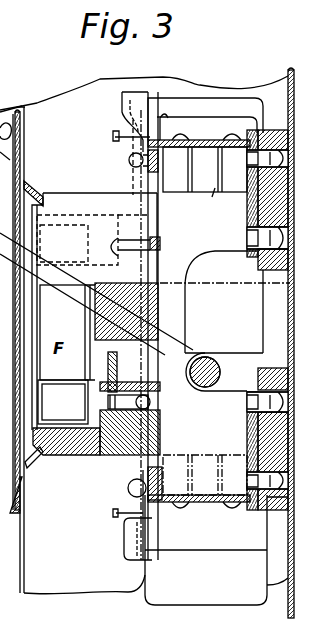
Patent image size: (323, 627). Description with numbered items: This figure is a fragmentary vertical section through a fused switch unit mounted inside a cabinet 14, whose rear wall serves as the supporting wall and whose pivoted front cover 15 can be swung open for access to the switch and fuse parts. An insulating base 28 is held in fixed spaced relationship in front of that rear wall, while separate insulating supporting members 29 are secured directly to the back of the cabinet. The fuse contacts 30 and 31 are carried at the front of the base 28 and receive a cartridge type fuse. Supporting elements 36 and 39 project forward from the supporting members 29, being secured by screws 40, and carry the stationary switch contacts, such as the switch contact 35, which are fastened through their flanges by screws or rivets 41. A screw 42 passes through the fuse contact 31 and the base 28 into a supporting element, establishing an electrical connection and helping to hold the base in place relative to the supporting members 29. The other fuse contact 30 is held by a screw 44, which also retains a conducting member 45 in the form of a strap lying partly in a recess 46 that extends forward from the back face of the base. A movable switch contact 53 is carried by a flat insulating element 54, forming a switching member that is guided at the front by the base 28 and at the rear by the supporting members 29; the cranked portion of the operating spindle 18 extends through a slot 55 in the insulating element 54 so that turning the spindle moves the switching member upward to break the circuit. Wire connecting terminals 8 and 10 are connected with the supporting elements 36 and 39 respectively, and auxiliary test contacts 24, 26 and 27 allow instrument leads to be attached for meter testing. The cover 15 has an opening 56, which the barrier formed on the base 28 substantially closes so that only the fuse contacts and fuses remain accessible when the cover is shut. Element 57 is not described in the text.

The wire connecting terminal 8 is at (124, 550).
The wire connecting terminal 10 is at (121, 98).
The cabinet 14 is at (3, 105).
The front cover 15 is at (27, 577).
The spindle 18 is at (221, 373).
The auxiliary test contact 24 is at (113, 514).
The auxiliary test contact 26 is at (112, 134).
The auxiliary test contact 27 is at (164, 120).
The insulating base 28 is at (72, 457).
The insulating supporting member 29 is at (258, 272).
The fuse contact 30 is at (100, 452).
The fuse contact 31 is at (99, 222).
The stationary switch contact 35 is at (181, 190).
The supporting element 36 is at (160, 508).
The supporting element 39 is at (145, 185).
The screw 40 is at (247, 226).
The screw or rivet 41 is at (188, 511).
The screw 42 is at (150, 242).
The screw 44 is at (150, 405).
The conducting member 45 is at (108, 393).
The recess 46 is at (160, 380).
The movable switch contact 53 is at (209, 206).
The flat insulating element 54 is at (252, 122).
The slot 55 is at (240, 353).
The opening 56 is at (37, 198).
The wedge 57 is at (20, 447).